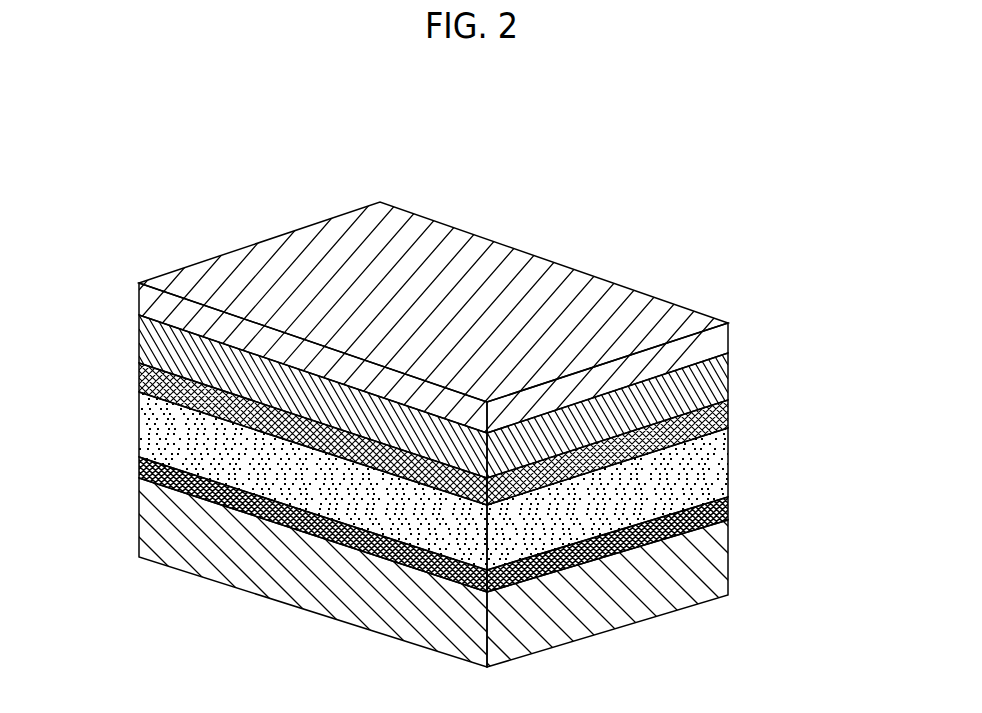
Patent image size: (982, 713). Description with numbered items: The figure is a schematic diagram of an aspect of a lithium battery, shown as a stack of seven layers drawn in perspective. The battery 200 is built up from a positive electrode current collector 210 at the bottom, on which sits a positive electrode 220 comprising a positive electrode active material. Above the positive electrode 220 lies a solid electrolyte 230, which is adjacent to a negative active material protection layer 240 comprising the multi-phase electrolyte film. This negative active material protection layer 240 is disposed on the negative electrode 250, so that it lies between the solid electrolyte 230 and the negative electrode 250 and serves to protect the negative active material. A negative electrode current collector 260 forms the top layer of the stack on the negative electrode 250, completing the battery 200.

The battery 200 is at (124, 158).
The positive electrode current collector 210 is at (730, 580).
The positive electrode 220 is at (730, 505).
The solid electrolyte 230 is at (730, 460).
The negative active material protection layer 240 is at (730, 418).
The negative electrode 250 is at (730, 375).
The negative electrode current collector 260 is at (730, 323).